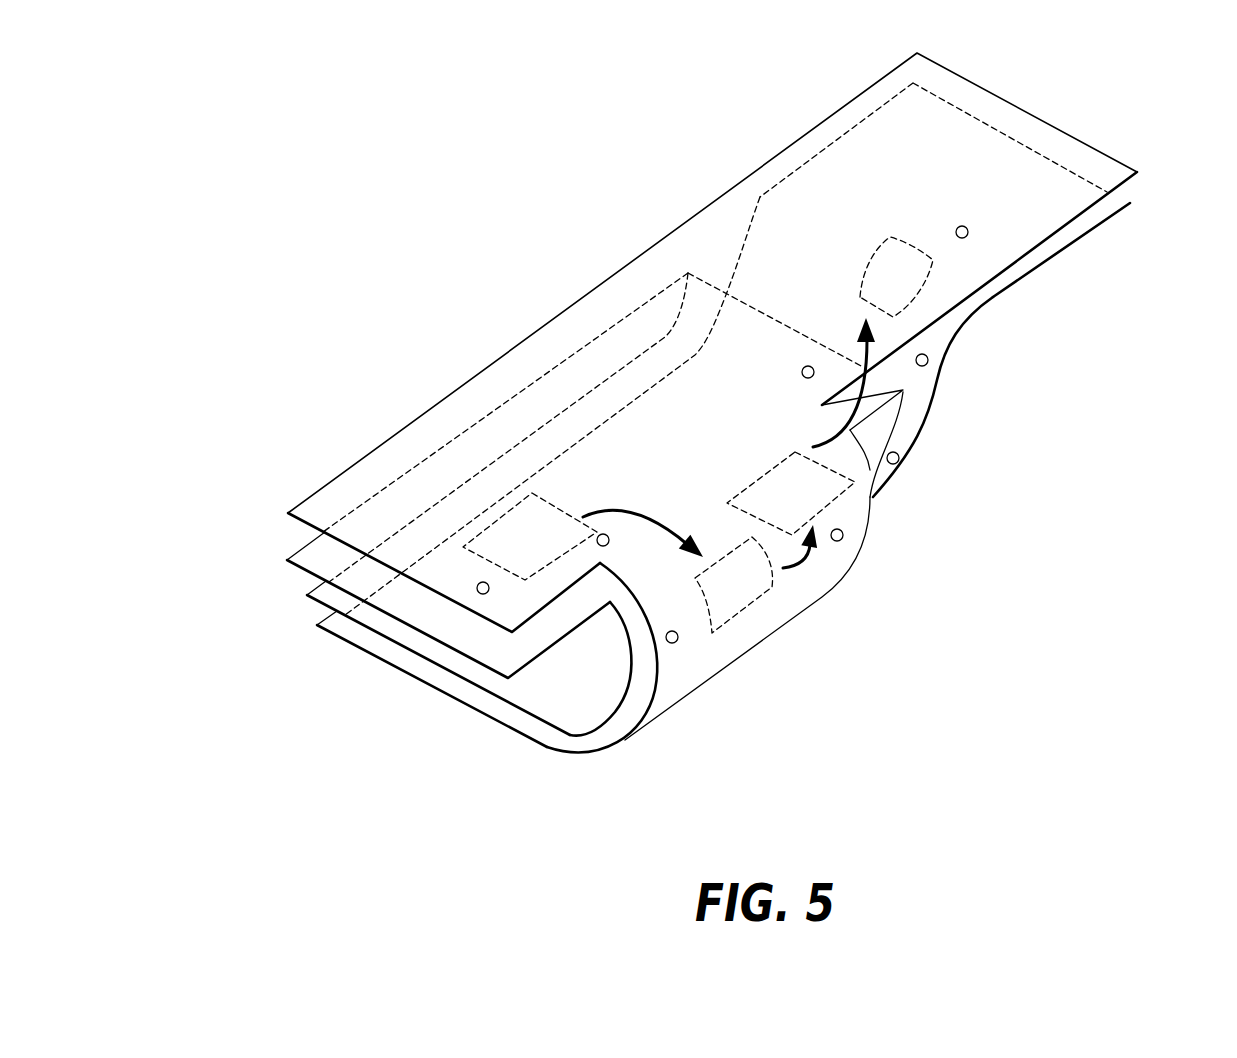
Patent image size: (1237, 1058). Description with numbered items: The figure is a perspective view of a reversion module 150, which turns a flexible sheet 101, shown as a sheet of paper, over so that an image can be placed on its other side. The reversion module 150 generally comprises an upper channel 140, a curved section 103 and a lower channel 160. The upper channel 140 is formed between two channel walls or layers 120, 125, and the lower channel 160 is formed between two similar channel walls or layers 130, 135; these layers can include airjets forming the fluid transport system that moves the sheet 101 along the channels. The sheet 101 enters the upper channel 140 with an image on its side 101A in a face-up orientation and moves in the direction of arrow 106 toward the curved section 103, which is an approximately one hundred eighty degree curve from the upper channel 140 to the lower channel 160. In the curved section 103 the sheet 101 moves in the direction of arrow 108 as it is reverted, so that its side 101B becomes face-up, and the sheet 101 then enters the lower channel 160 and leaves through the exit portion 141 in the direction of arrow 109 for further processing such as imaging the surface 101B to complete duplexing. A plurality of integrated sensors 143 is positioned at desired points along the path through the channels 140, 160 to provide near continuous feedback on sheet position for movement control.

The reversion module 150 is at (565, 257).
The channel wall layer 120 is at (1123, 167).
The channel wall layer 125 is at (1120, 213).
The channel wall layer 130 is at (325, 585).
The channel wall layer 135 is at (363, 653).
The upper channel 140 is at (1075, 239).
The exit portion 141 is at (970, 427).
The integrated sensors 143 is at (968, 238).
The flexible sheet 101 is at (755, 481).
The side of sheet 101A is at (530, 536).
The side of sheet 101B is at (896, 277).
The curved section 103 is at (668, 697).
The arrow 106 is at (635, 512).
The arrow 108 is at (807, 558).
The arrow 109 is at (858, 336).
The lower channel 160 is at (880, 482).